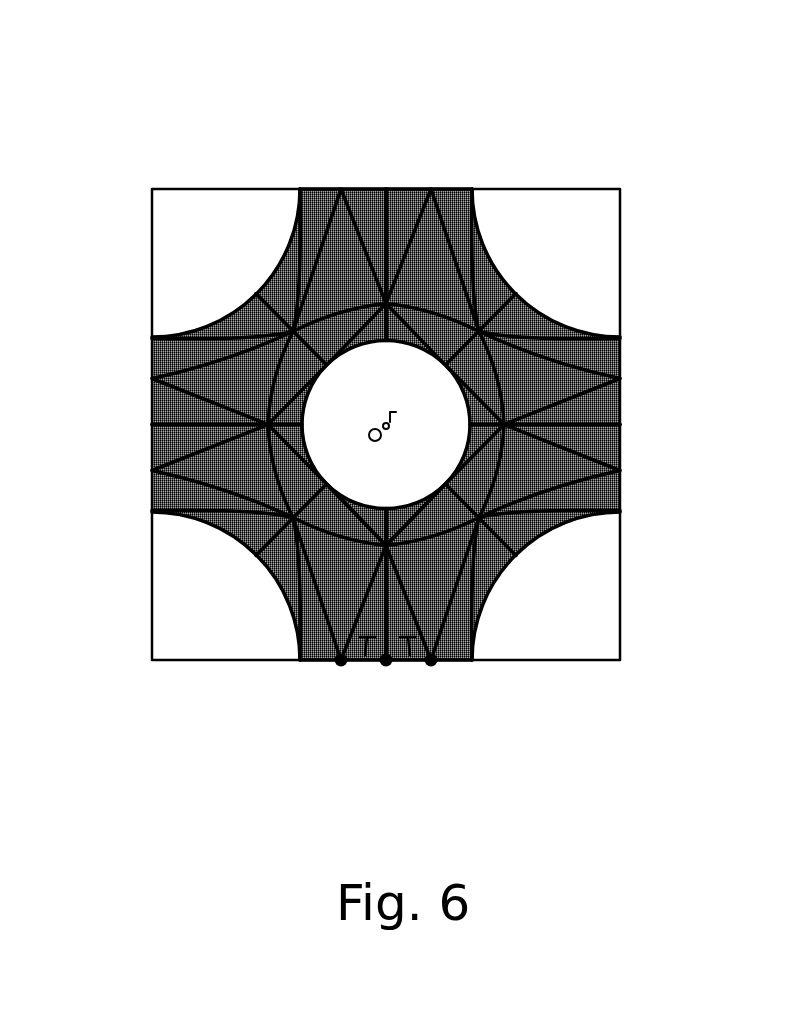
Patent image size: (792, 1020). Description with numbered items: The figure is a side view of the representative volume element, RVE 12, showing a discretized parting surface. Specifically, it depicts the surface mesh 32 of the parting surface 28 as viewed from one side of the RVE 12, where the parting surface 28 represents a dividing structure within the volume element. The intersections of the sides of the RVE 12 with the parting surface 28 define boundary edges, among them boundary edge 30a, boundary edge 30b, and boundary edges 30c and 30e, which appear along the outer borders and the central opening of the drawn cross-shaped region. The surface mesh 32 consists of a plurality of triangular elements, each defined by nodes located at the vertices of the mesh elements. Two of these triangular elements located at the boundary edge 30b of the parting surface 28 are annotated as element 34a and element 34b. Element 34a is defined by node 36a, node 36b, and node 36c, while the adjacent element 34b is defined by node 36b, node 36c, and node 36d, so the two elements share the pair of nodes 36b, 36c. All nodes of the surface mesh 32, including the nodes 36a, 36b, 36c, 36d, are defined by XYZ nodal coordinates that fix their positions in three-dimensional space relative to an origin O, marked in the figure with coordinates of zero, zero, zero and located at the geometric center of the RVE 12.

The RVE 12 is at (606, 107).
The parting surface 28 is at (540, 306).
The surface mesh 32 is at (602, 352).
The boundary edge 30a is at (400, 180).
The boundary edge 30b is at (352, 661).
The boundary edge 30c is at (386, 425).
The boundary edge 30e is at (298, 404).
The element 34a is at (357, 655).
The element 34b is at (403, 657).
The node 36a is at (328, 658).
The node 36b is at (364, 512).
The node 36c is at (380, 658).
The node 36d is at (430, 658).